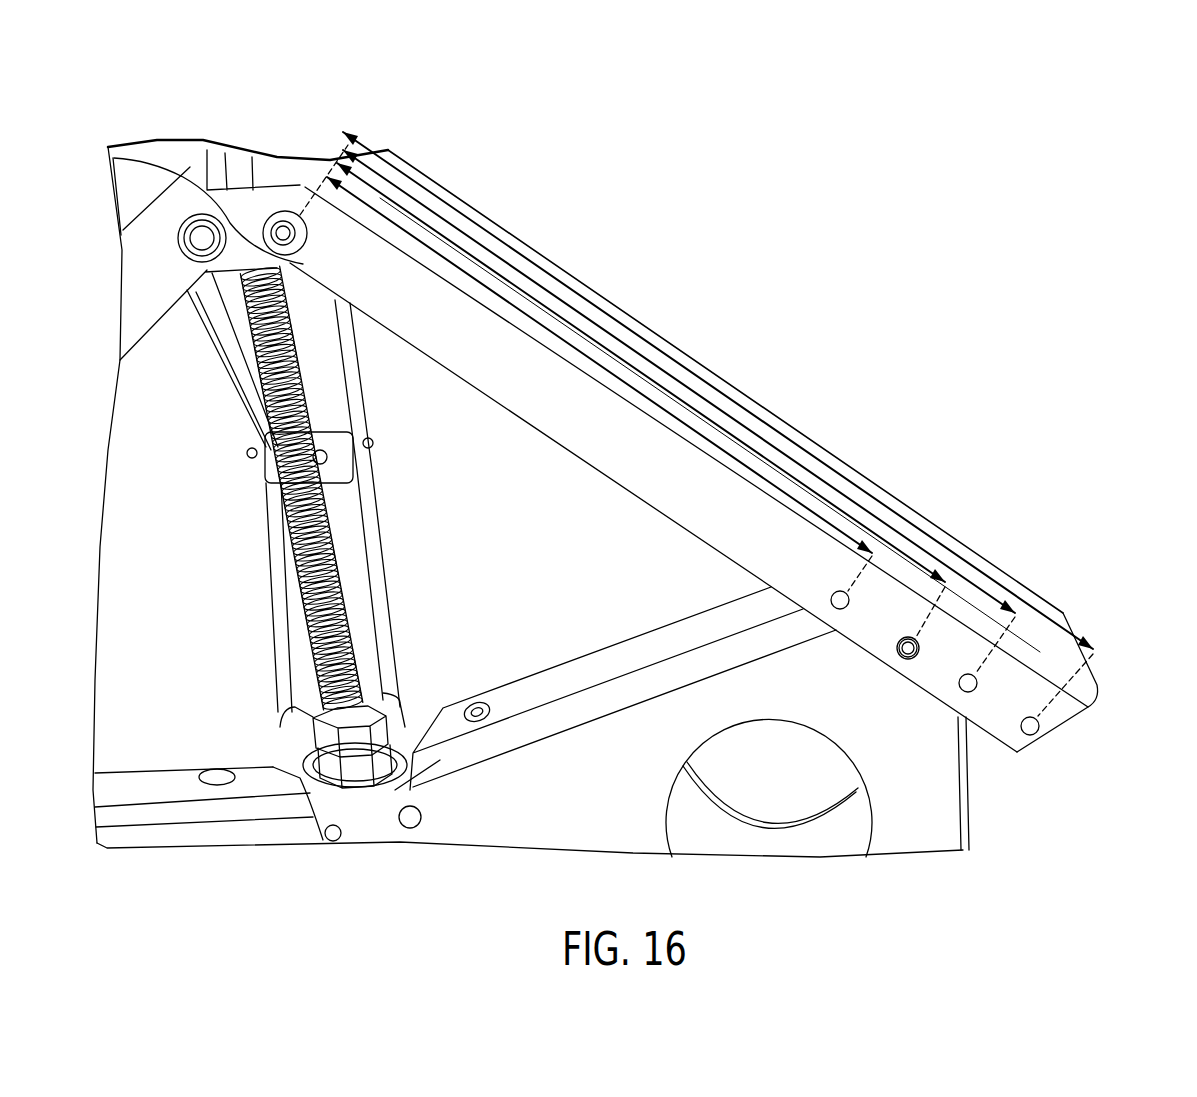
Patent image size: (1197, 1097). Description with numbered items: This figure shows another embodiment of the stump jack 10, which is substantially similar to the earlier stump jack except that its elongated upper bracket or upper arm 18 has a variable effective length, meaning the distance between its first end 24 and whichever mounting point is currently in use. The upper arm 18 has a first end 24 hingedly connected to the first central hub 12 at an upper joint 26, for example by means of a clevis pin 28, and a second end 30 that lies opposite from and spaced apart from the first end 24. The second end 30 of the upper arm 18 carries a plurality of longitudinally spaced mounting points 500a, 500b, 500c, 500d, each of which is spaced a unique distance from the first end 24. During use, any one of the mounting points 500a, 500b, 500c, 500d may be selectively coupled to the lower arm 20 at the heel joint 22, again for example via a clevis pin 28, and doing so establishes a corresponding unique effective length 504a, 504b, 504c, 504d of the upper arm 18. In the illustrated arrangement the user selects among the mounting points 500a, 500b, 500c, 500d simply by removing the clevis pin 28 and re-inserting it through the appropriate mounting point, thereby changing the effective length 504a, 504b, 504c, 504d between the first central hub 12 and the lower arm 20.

The stump jack 10 is at (192, 122).
The first central hub 12 is at (241, 212).
The upper arm 18 is at (560, 410).
The lower arm 20 is at (627, 840).
The heel joint 22 is at (900, 652).
The first end 24 is at (297, 212).
The upper joint 26 is at (281, 222).
The clevis pin 28 is at (288, 219).
The second end 30 is at (1085, 690).
The mounting point 500a is at (1030, 737).
The mounting point 500b is at (970, 694).
The mounting point 500c is at (906, 658).
The mounting point 500d is at (838, 610).
The effective length 504a is at (493, 233).
The effective length 504b is at (450, 222).
The effective length 504c is at (410, 208).
The effective length 504d is at (370, 197).